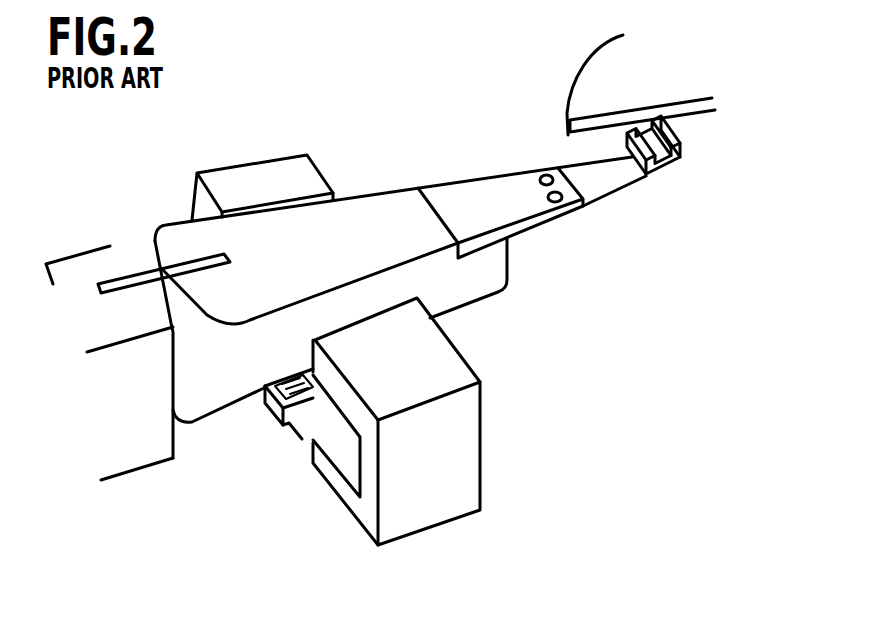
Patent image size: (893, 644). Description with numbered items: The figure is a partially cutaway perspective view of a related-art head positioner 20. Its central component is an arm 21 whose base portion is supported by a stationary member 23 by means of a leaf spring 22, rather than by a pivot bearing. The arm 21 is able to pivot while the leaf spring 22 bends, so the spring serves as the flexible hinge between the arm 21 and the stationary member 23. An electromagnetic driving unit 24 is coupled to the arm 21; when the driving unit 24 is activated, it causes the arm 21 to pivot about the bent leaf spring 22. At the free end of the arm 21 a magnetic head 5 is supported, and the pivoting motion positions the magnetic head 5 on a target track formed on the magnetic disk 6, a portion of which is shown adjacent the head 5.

The head positioner 20 is at (394, 53).
The arm 21 is at (372, 207).
The leaf spring 22 is at (163, 290).
The stationary member 23 is at (107, 448).
The electromagnetic driving unit 24 is at (492, 458).
The magnetic head 5 is at (671, 178).
The magnetic disk 6 is at (595, 71).